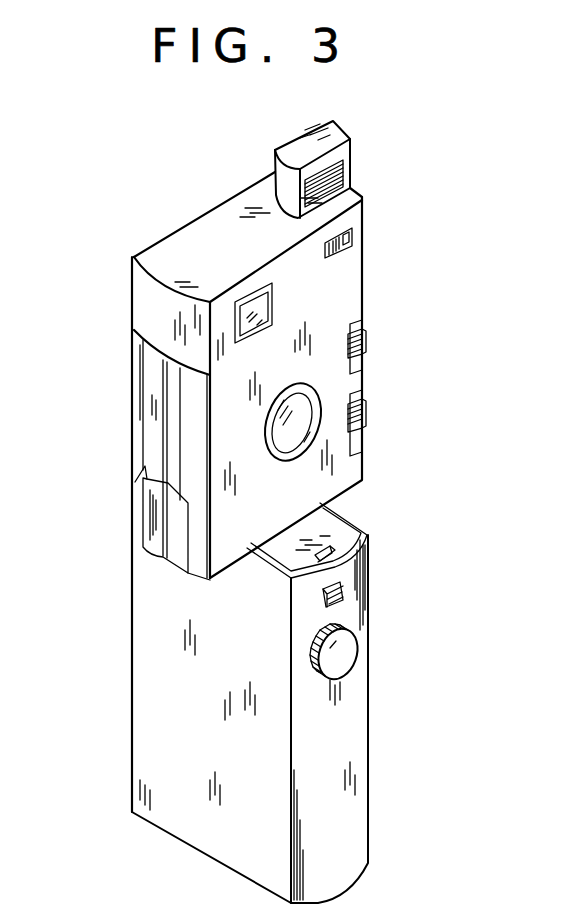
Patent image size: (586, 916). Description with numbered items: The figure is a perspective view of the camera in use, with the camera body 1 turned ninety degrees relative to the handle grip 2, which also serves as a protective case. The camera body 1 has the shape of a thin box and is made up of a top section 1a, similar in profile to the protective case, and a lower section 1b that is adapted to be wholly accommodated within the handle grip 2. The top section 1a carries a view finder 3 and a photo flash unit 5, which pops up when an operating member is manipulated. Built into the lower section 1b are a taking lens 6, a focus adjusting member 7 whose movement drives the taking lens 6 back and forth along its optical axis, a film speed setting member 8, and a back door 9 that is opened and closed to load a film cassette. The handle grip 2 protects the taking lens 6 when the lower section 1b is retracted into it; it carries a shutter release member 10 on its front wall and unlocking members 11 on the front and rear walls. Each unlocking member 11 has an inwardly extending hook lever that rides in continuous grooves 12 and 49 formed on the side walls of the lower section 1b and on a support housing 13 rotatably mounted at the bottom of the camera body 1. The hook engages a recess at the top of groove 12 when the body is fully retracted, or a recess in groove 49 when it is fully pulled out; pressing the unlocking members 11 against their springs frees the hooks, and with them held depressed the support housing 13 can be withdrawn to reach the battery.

The camera body 1 is at (135, 364).
The top section 1a is at (348, 272).
The lower section 1b is at (148, 412).
The handle grip 2 is at (131, 724).
The view finder 3 is at (252, 302).
The photo flash unit 5 is at (332, 134).
The taking lens 6 is at (287, 436).
The focus adjusting member 7 is at (364, 416).
The film speed setting member 8 is at (364, 338).
The back door 9 is at (147, 514).
The shutter release member 10 is at (338, 658).
The unlocking member 11 is at (343, 595).
The groove 12 is at (179, 437).
The support housing 13 is at (322, 523).
The groove 49 is at (358, 540).